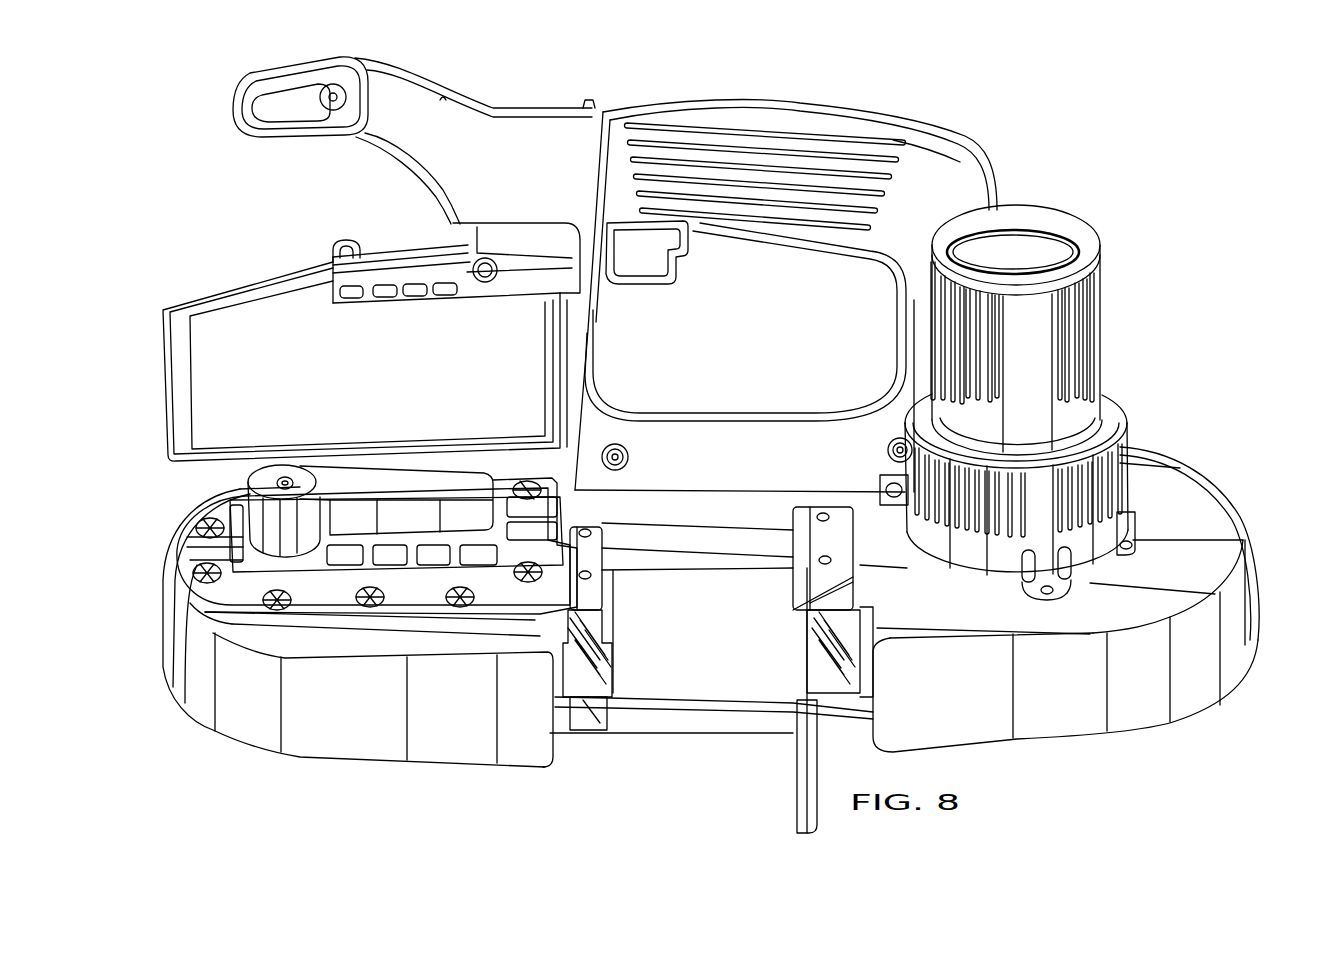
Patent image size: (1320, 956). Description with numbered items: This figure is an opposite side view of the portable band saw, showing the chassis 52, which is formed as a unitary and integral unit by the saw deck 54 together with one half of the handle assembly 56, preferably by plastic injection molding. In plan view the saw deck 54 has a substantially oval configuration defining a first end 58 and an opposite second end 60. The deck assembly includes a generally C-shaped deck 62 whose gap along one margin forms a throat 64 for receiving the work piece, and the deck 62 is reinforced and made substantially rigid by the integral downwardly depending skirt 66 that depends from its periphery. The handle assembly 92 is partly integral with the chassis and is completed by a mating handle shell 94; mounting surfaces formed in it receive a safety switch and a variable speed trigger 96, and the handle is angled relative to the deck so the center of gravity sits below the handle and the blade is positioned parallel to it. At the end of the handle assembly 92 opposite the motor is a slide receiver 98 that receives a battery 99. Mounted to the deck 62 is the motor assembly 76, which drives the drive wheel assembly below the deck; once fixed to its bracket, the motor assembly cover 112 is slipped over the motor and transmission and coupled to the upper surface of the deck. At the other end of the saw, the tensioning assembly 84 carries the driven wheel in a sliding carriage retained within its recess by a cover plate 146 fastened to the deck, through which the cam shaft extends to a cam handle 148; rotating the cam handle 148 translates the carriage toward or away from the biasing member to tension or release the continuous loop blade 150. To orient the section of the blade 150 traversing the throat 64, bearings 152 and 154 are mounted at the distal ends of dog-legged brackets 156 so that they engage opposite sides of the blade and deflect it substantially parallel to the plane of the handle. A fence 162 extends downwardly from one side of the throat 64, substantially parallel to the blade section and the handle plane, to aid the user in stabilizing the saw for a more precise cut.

The chassis 52 is at (1147, 435).
The saw deck 54 is at (1192, 481).
The handle assembly 56 is at (1010, 162).
The first end 58 is at (165, 597).
The second end 60 is at (1264, 605).
The deck 62 is at (1190, 578).
The throat 64 is at (717, 648).
The skirt 66 is at (385, 724).
The motor assembly 76 is at (1115, 365).
The tensioning assembly 84 is at (197, 494).
The handle assembly 92 is at (881, 258).
The mating handle shell 94 is at (612, 104).
The variable speed trigger 96 is at (676, 272).
The slide receiver 98 is at (389, 243).
The battery 99 is at (311, 414).
The motor assembly cover 112 is at (1045, 381).
The cover plate 146 is at (320, 607).
The cam handle 148 is at (428, 530).
The continuous loop blade 150 is at (757, 703).
The bearing 152 is at (597, 727).
The bearing 154 is at (835, 720).
The brackets 156 is at (605, 593).
The fence 162 is at (803, 789).